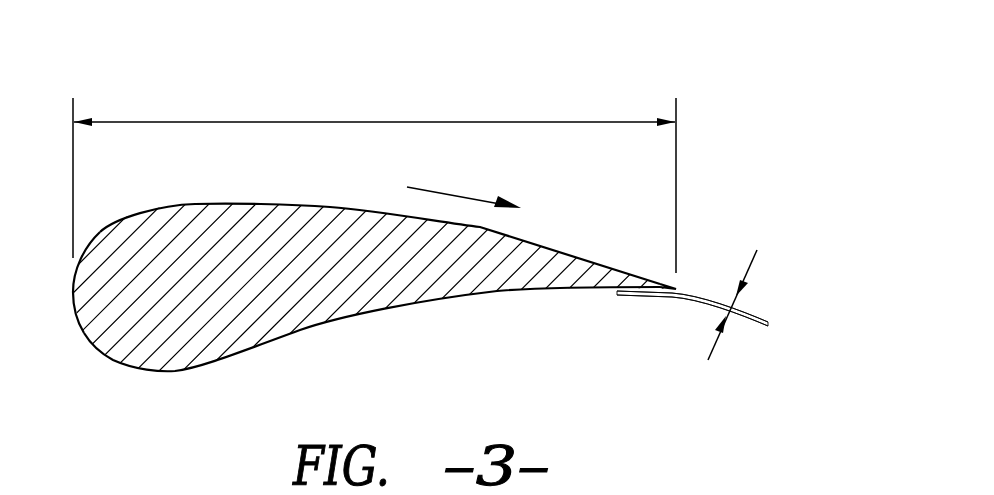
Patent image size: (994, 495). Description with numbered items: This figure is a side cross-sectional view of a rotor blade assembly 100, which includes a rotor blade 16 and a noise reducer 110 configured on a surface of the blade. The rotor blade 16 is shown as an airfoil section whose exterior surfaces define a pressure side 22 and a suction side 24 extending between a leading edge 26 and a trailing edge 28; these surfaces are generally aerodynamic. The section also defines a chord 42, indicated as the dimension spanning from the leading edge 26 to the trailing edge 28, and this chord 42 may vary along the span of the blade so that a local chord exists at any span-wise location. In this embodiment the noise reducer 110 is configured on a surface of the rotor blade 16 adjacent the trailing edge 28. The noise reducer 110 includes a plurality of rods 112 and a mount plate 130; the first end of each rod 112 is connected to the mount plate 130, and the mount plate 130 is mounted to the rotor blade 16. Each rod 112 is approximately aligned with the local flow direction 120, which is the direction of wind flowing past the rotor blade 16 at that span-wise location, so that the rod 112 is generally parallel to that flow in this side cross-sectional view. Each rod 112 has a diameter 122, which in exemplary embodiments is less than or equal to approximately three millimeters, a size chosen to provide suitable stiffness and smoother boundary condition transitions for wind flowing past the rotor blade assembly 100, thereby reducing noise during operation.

The rotor blade assembly 100 is at (172, 74).
The rotor blade 16 is at (130, 198).
The pressure side 22 is at (277, 338).
The suction side 24 is at (290, 205).
The leading edge 26 is at (72, 297).
The trailing edge 28 is at (678, 289).
The chord 42 is at (407, 121).
The noise reducer 110 is at (673, 322).
The rod 112 is at (740, 335).
The local flow direction 120 is at (463, 192).
The diameter 122 is at (757, 267).
The mount plate 130 is at (623, 298).